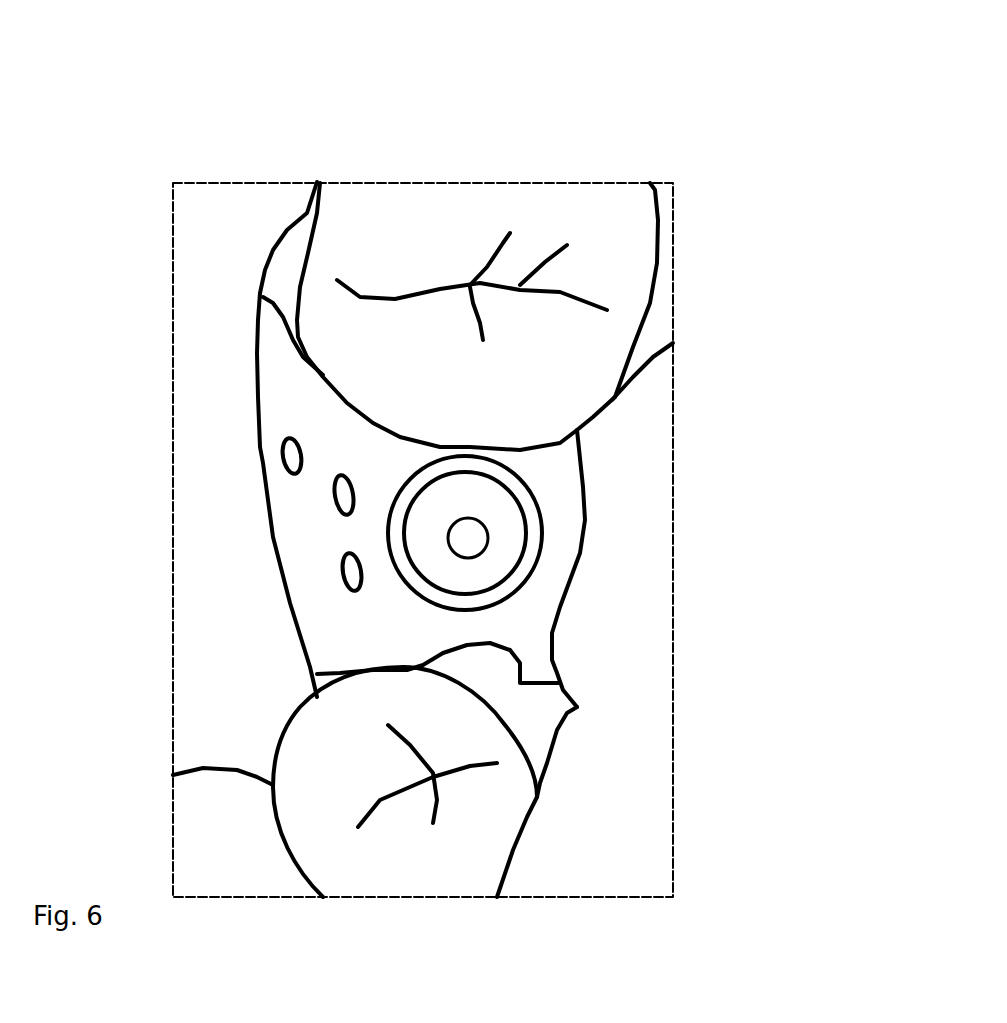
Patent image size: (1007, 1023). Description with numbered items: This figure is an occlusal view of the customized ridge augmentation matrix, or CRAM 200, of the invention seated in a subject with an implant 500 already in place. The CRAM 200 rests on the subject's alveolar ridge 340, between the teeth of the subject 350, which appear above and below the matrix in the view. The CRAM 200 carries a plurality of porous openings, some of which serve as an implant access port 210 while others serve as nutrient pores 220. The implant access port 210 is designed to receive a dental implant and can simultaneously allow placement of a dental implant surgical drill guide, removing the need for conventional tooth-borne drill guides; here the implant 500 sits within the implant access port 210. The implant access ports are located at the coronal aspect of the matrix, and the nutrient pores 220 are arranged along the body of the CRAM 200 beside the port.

The CRAM 200 is at (302, 418).
The implant access port 210 is at (527, 563).
The nutrient pores 220 is at (297, 463).
The alveolar ridge 340 is at (513, 705).
The teeth of the subject 350 is at (558, 210).
The implant 500 is at (505, 537).